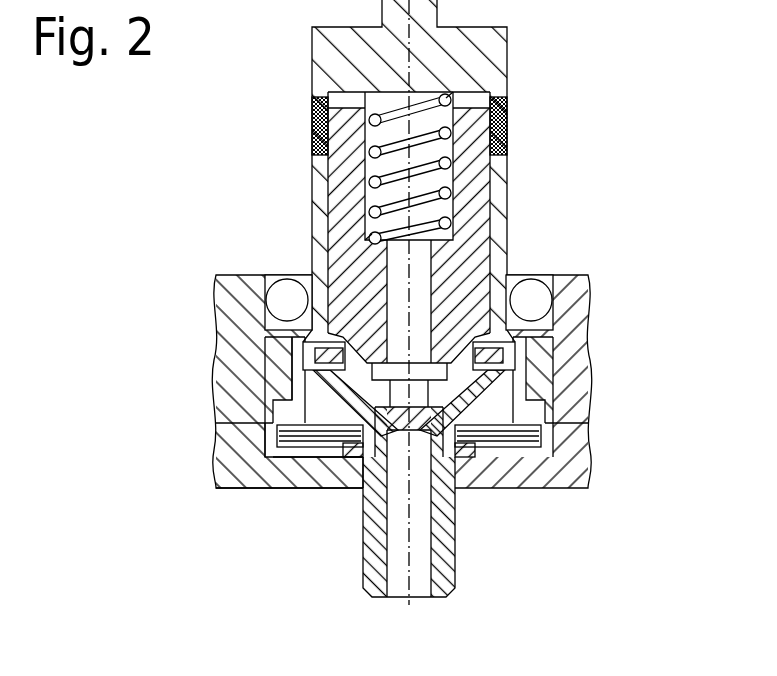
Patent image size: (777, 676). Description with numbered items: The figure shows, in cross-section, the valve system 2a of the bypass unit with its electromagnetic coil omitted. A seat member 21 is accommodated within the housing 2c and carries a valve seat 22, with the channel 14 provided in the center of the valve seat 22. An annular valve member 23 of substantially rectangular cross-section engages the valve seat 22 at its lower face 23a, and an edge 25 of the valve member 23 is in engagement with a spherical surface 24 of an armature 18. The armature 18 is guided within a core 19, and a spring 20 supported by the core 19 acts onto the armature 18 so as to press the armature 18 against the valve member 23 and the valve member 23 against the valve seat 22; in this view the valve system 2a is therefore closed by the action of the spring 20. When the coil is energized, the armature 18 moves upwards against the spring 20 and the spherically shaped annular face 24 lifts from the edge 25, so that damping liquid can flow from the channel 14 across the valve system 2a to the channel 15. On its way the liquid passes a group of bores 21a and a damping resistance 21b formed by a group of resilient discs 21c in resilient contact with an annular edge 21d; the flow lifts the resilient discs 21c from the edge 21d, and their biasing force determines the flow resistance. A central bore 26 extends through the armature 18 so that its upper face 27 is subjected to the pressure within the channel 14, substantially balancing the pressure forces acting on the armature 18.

The valve system 2a is at (400, 354).
The housing 2c is at (568, 398).
The channel 14 is at (422, 520).
The channel 15 is at (245, 480).
The armature 18 is at (481, 228).
The core 19 is at (485, 46).
The spring 20 is at (506, 133).
The seat member 21 is at (266, 375).
The bores 21a is at (262, 344).
The damping resistance 21b is at (293, 462).
The resilient discs 21c is at (325, 450).
The annular edge 21d is at (275, 425).
The valve seat 22 is at (513, 348).
The valve member 23 is at (510, 335).
The lower face 23a is at (478, 452).
The spherical surface 24 is at (300, 398).
The edge 25 is at (300, 345).
The central bore 26 is at (398, 270).
The upper face 27 is at (315, 100).